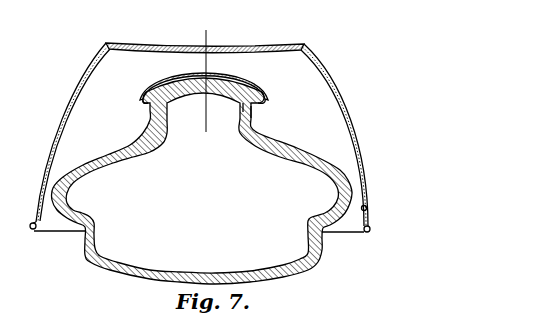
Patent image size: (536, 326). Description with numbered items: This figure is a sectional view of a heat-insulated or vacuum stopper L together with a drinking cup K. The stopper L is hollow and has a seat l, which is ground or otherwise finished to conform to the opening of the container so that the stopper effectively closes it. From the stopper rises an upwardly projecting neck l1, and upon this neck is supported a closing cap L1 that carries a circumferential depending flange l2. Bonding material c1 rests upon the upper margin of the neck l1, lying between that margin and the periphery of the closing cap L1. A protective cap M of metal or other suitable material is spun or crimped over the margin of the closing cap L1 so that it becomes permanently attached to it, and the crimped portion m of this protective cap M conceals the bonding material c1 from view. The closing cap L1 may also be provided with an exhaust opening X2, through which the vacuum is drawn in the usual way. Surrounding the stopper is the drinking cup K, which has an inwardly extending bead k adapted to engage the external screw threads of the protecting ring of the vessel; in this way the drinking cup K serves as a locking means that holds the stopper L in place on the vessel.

The exhaust opening X2 is at (205, 44).
The protective cap M is at (165, 80).
The crimped portion m is at (142, 96).
The circumferential depending flange l2 is at (266, 100).
The bonding material c1 is at (231, 106).
The neck l1 is at (252, 121).
The closing cap L1 is at (208, 112).
The drinking cup K is at (337, 83).
The heat-insulated or vacuum stopper L is at (310, 168).
The inwardly extending bead k is at (370, 209).
The seat l is at (324, 229).